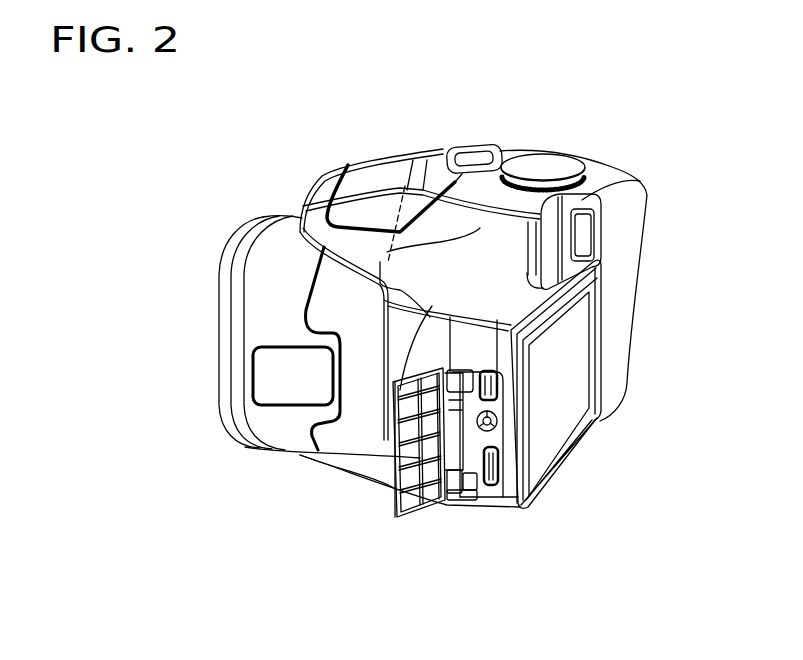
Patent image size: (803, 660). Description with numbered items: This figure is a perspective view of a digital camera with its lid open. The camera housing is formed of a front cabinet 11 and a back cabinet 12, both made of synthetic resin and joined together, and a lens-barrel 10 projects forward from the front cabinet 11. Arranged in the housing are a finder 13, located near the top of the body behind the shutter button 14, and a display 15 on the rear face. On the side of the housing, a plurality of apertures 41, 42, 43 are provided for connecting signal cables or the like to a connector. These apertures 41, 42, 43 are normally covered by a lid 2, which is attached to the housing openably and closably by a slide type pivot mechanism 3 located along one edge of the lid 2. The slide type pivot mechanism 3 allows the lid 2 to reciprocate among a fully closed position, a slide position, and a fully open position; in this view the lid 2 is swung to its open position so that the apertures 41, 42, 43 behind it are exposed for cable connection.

The lid 2 is at (397, 497).
The slide type pivot mechanism 3 is at (450, 483).
The lens-barrel 10 is at (270, 253).
The front cabinet 11 is at (380, 440).
The back cabinet 12 is at (617, 353).
The finder 13 is at (597, 227).
The shutter button 14 is at (455, 147).
The display 15 is at (563, 420).
The aperture 41 is at (490, 400).
The aperture 42 is at (493, 427).
The aperture 43 is at (503, 483).